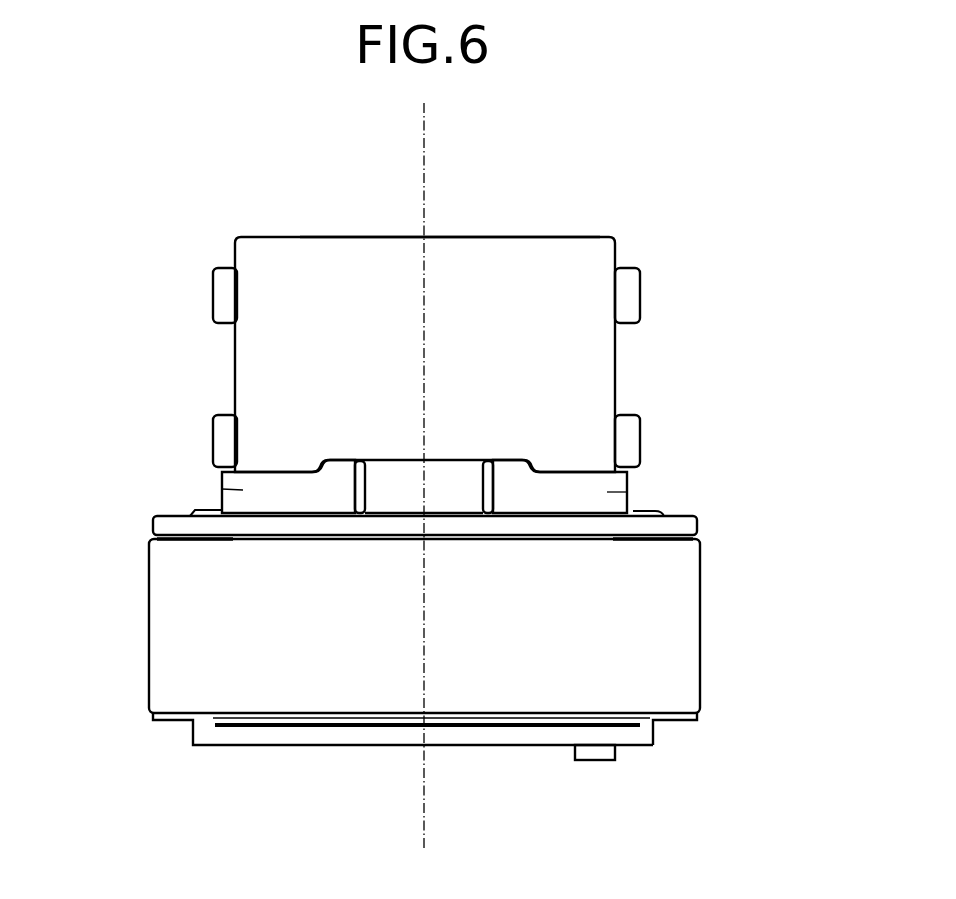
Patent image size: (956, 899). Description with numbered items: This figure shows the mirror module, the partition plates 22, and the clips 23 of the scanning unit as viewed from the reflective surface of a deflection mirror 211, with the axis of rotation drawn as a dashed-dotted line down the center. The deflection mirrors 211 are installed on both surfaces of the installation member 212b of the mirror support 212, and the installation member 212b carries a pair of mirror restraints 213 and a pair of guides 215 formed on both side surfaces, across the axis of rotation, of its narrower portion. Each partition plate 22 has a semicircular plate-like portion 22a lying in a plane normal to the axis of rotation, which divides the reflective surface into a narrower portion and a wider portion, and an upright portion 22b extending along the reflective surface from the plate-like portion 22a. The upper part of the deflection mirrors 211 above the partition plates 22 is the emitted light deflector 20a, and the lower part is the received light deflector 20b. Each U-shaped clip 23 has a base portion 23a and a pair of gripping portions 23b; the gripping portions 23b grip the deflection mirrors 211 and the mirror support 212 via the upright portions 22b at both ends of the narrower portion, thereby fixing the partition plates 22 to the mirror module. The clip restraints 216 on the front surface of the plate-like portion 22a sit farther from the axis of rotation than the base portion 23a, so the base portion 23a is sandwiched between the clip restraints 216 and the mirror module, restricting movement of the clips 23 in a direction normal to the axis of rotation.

The emitted light deflector 20a is at (595, 371).
The received light deflector 20b is at (682, 630).
The deflection mirror 211 is at (516, 240).
The mirror support 212 is at (550, 747).
The installation member 212b is at (660, 733).
The mirror restraint 213 is at (213, 289).
The guide 215 is at (213, 428).
The clip restraint 216 is at (168, 509).
The partition plate 22 is at (343, 680).
The plate-like portion 22a is at (277, 523).
The upright portion 22b is at (398, 488).
The clip 23 is at (422, 472).
The base portion 23a is at (222, 479).
The gripping portion 23b is at (222, 498).